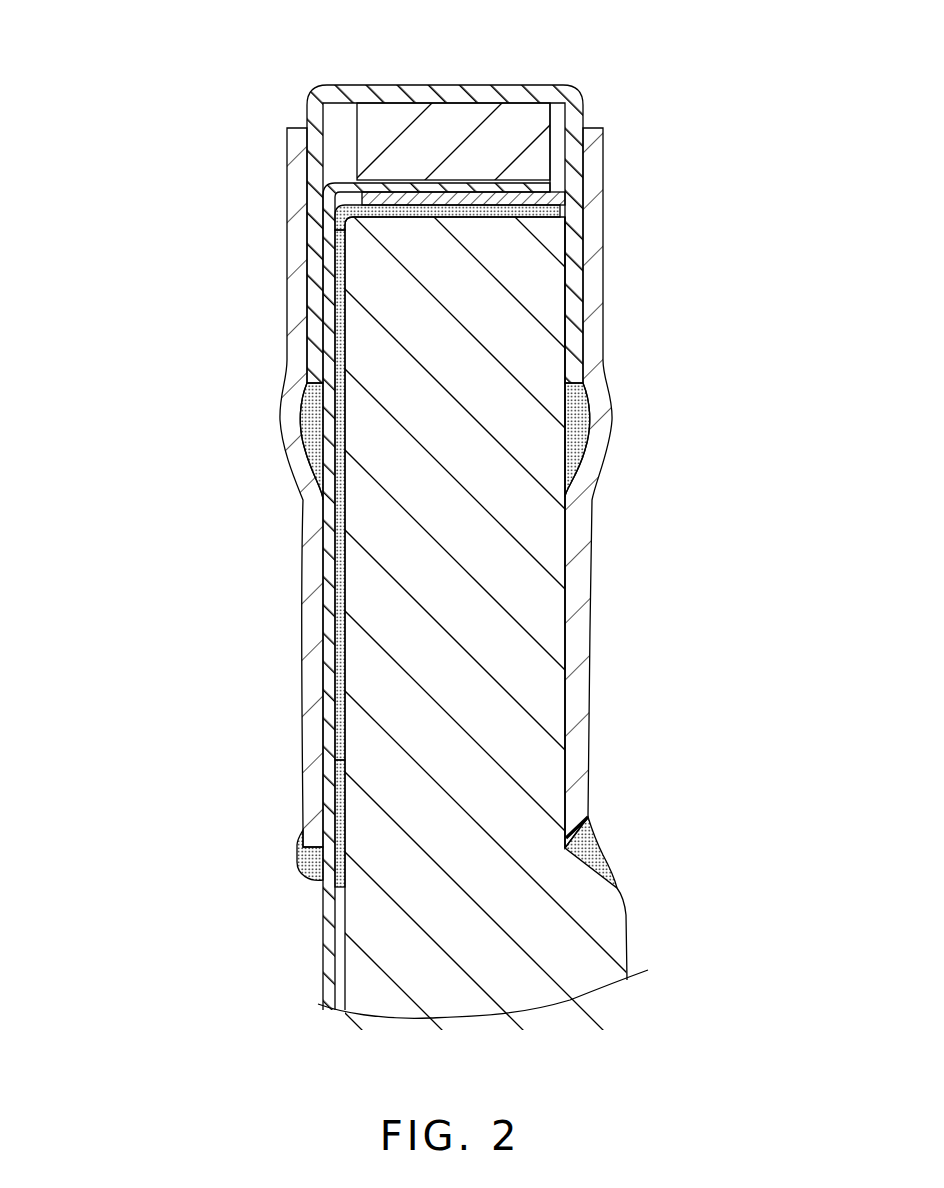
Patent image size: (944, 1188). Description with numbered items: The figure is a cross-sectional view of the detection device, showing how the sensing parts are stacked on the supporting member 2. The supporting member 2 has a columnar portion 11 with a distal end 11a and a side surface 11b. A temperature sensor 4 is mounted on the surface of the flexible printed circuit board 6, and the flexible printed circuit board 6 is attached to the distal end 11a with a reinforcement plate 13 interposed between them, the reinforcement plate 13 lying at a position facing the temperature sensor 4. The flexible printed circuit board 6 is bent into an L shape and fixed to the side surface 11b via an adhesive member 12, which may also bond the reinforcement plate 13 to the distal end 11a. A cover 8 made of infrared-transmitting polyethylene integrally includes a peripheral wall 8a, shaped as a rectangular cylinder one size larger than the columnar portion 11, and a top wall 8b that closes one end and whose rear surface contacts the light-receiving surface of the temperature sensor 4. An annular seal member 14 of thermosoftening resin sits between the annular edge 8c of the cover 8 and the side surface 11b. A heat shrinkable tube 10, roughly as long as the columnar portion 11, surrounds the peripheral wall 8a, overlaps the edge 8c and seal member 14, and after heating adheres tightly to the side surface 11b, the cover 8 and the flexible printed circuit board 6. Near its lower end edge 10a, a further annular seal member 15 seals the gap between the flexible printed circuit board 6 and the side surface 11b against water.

The supporting member 2 is at (612, 922).
The temperature sensor 4 is at (478, 118).
The flexible printed circuit board 6 is at (330, 948).
The cover 8 is at (590, 118).
The peripheral wall 8a is at (310, 135).
The top wall 8b is at (447, 85).
The annular edge 8c is at (587, 405).
The heat shrinkable tube 10 is at (598, 322).
The lower end edge 10a is at (310, 862).
The columnar portion 11 is at (557, 607).
The distal end 11a is at (412, 212).
The side surface 11b is at (333, 607).
The adhesive member 12 is at (328, 808).
The reinforcement plate 13 is at (517, 200).
The annular seal member 14 is at (315, 410).
The annular seal member 15 is at (608, 850).